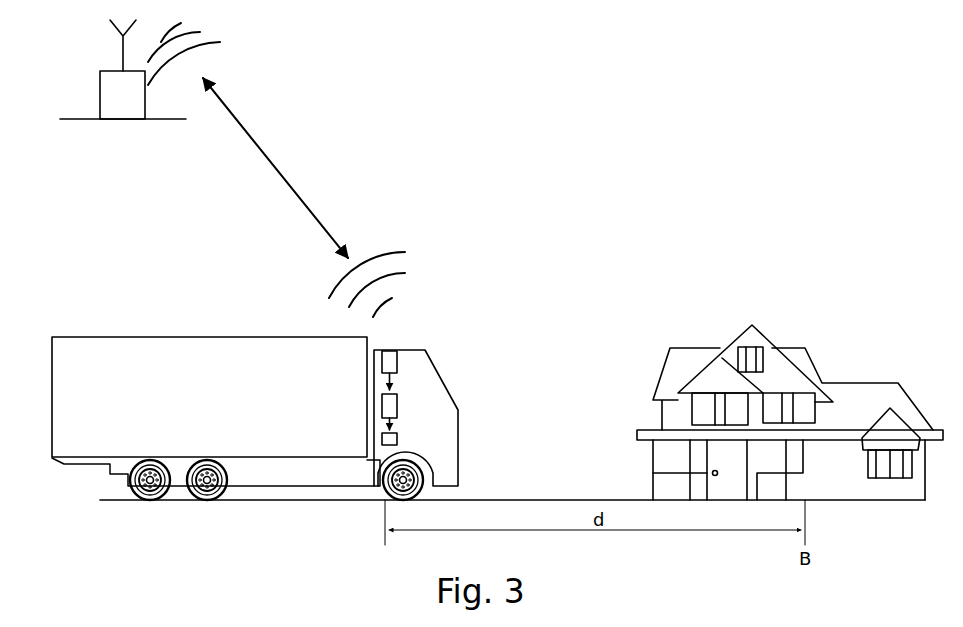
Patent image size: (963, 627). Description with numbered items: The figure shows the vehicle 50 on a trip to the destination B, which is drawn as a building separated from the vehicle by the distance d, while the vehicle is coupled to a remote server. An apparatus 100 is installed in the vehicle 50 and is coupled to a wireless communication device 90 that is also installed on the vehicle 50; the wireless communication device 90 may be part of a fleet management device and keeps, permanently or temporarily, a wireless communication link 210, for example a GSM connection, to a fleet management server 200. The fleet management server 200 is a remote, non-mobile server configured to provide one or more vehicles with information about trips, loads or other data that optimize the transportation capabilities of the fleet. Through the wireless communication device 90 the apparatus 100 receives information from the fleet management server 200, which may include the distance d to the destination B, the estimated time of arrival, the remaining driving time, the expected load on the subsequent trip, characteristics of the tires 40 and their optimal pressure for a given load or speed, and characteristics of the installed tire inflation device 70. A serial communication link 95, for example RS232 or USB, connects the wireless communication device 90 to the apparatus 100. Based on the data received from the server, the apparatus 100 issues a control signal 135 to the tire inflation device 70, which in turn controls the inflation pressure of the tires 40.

The fleet management server 200 is at (110, 97).
The wireless communication link 210 is at (267, 156).
The vehicle 50 is at (113, 321).
The tires 40 is at (128, 486).
The wireless communication device 90 is at (387, 353).
The serial communication link 95 is at (395, 380).
The apparatus 100 is at (397, 410).
The control signal 135 is at (397, 423).
The tire inflation device 70 is at (397, 440).